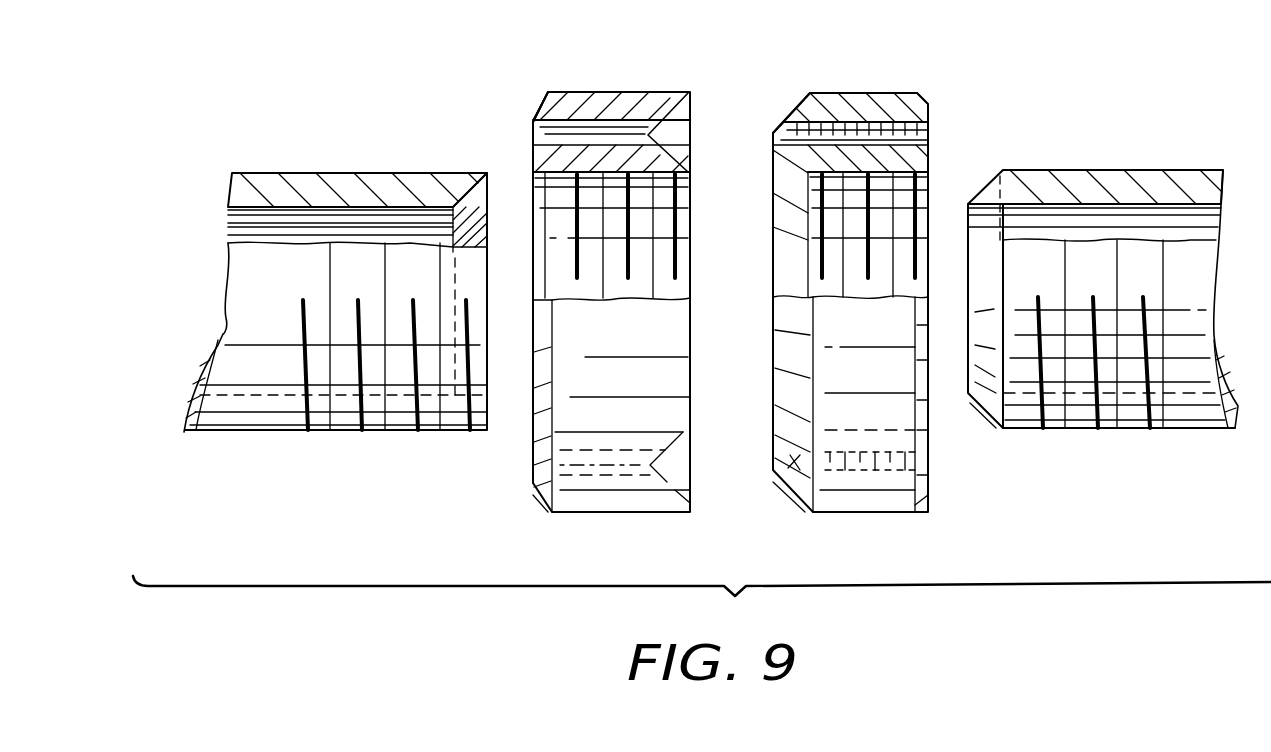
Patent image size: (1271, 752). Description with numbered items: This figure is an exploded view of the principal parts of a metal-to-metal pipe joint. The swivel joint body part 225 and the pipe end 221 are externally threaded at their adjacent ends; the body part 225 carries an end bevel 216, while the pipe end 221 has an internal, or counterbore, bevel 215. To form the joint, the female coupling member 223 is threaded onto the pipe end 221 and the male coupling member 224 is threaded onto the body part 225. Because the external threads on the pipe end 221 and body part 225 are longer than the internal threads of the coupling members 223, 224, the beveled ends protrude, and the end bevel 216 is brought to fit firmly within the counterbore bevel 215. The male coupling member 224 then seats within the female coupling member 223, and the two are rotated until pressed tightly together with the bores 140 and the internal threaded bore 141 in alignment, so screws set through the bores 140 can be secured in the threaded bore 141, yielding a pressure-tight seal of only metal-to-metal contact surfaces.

The bore 140 is at (566, 120).
The internal threaded bore 141 is at (787, 118).
The counterbore bevel 215 is at (491, 198).
The end bevel 216 is at (978, 196).
The pipe end 221 is at (339, 173).
The female coupling member 223 is at (531, 114).
The male coupling member 224 is at (774, 133).
The swivel joint body part 225 is at (1162, 148).